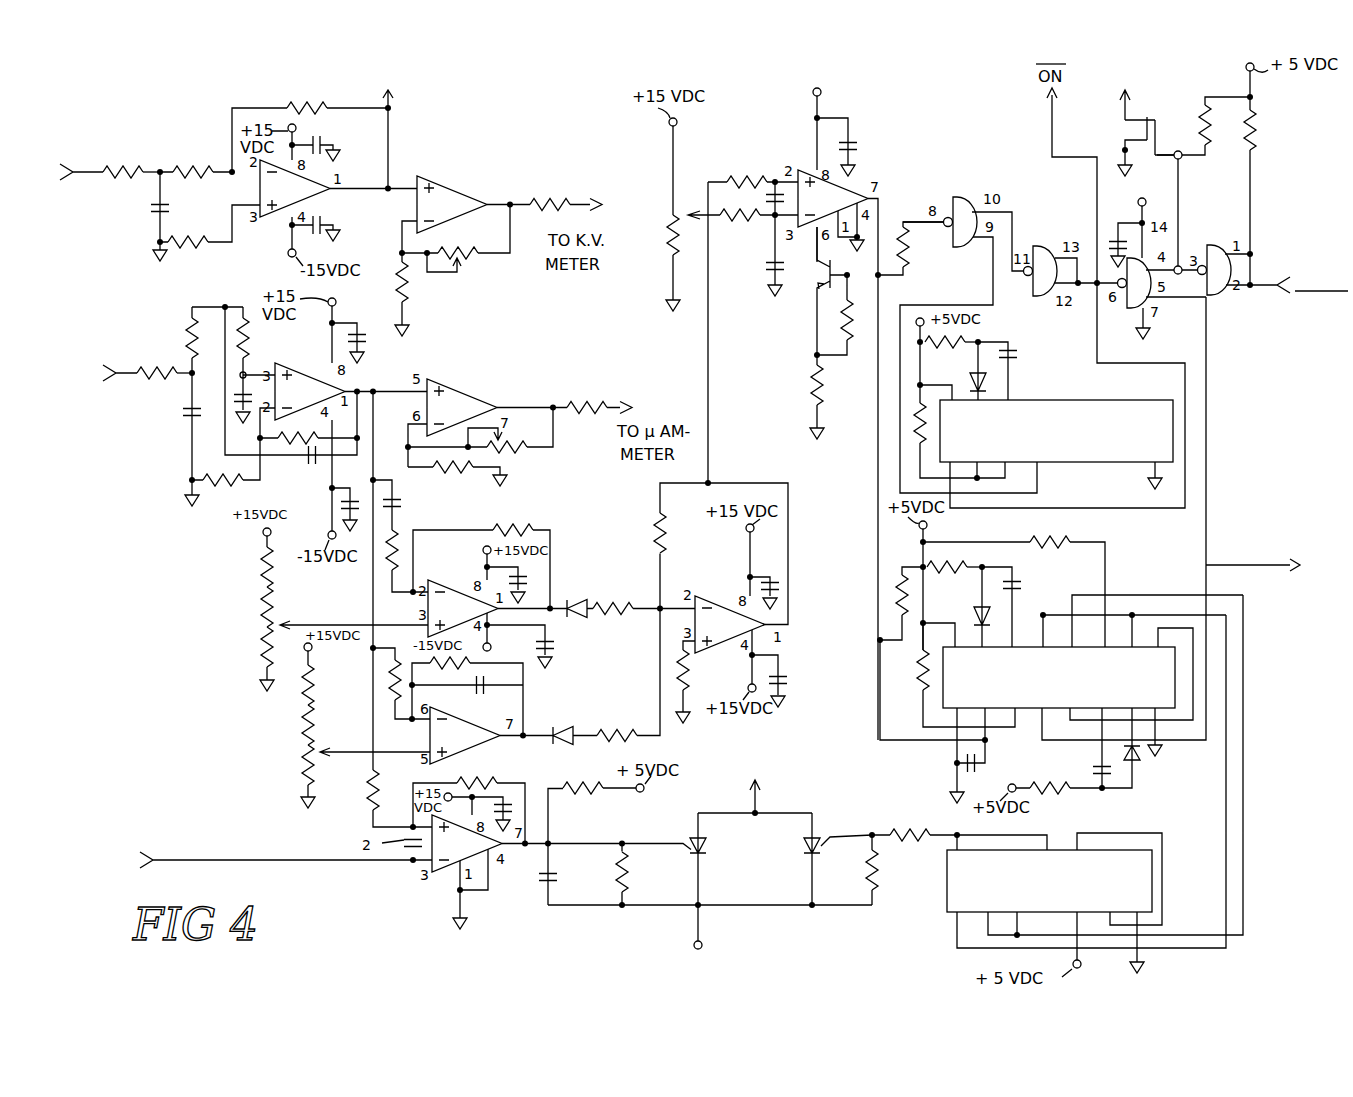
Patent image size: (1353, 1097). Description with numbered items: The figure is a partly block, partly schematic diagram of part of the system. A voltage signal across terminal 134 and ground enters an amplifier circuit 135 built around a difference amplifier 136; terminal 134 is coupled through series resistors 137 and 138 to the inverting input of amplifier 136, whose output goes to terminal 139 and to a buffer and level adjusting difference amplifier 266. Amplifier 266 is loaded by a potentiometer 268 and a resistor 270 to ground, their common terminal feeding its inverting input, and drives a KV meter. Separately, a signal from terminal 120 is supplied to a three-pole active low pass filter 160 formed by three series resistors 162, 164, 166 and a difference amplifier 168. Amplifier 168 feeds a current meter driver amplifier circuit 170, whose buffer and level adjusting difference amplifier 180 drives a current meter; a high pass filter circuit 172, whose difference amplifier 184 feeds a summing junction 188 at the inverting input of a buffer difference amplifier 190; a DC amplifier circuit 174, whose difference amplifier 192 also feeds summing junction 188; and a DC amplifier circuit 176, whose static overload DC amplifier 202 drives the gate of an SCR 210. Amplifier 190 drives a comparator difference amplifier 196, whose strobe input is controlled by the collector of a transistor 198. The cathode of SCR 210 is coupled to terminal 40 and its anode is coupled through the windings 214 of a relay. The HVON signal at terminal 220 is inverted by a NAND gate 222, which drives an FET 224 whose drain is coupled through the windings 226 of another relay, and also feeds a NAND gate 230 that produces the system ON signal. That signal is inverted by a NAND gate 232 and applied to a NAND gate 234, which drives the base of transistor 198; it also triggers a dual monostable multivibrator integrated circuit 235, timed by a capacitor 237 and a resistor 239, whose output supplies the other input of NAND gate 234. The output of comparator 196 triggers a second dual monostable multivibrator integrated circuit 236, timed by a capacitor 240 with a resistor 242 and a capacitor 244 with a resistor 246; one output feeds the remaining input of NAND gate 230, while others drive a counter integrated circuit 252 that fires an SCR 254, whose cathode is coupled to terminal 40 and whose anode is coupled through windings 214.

The terminal 40 is at (695, 943).
The terminal 120 is at (102, 377).
The terminal 134 is at (76, 164).
The amplifier circuit 135 is at (178, 105).
The difference amplifier 136 is at (276, 232).
The resistor 137 is at (110, 160).
The resistor 138 is at (194, 166).
The terminal 139 is at (394, 95).
The three-pole active low pass filter 160 is at (258, 324).
The resistor 162 is at (160, 385).
The resistor 164 is at (185, 334).
The resistor 166 is at (254, 353).
The difference amplifier 168 is at (308, 364).
The current meter driver amplifier circuit 170 is at (503, 379).
The high pass filter circuit 172 is at (542, 521).
The DC amplifier circuit 174 is at (542, 727).
The DC amplifier circuit 176 is at (436, 895).
The buffer and level adjusting difference amplifier 180 is at (453, 379).
The difference amplifier 184 is at (436, 580).
The summing junction 188 is at (658, 606).
The buffer difference amplifier 190 is at (708, 594).
The difference amplifier 192 is at (469, 726).
The comparator difference amplifier 196 is at (849, 184).
The transistor 198 is at (818, 286).
The static overload DC amplifier 202 is at (448, 863).
The SCR 210 is at (707, 852).
The windings 214 is at (777, 793).
The terminal 220 is at (1285, 286).
The NAND gate 222 is at (1209, 249).
The FET 224 is at (1120, 130).
The windings 226 is at (1143, 85).
The NAND gate 230 is at (1135, 310).
The NAND gate 232 is at (1045, 244).
The NAND gate 234 is at (963, 197).
The dual monostable multivibrator integrated circuit 235 is at (1068, 400).
The dual monostable multivibrator integrated circuit 236 is at (1033, 710).
The capacitor 237 is at (1016, 354).
The resistor 239 is at (949, 350).
The capacitor 240 is at (1100, 770).
The resistor 242 is at (1075, 794).
The capacitor 244 is at (1019, 580).
The resistor 246 is at (961, 564).
The counter integrated circuit 252 is at (946, 894).
The SCR 254 is at (806, 854).
The buffer and level adjusting difference amplifier 266 is at (450, 190).
The potentiometer 268 is at (476, 254).
The resistor 270 is at (409, 302).